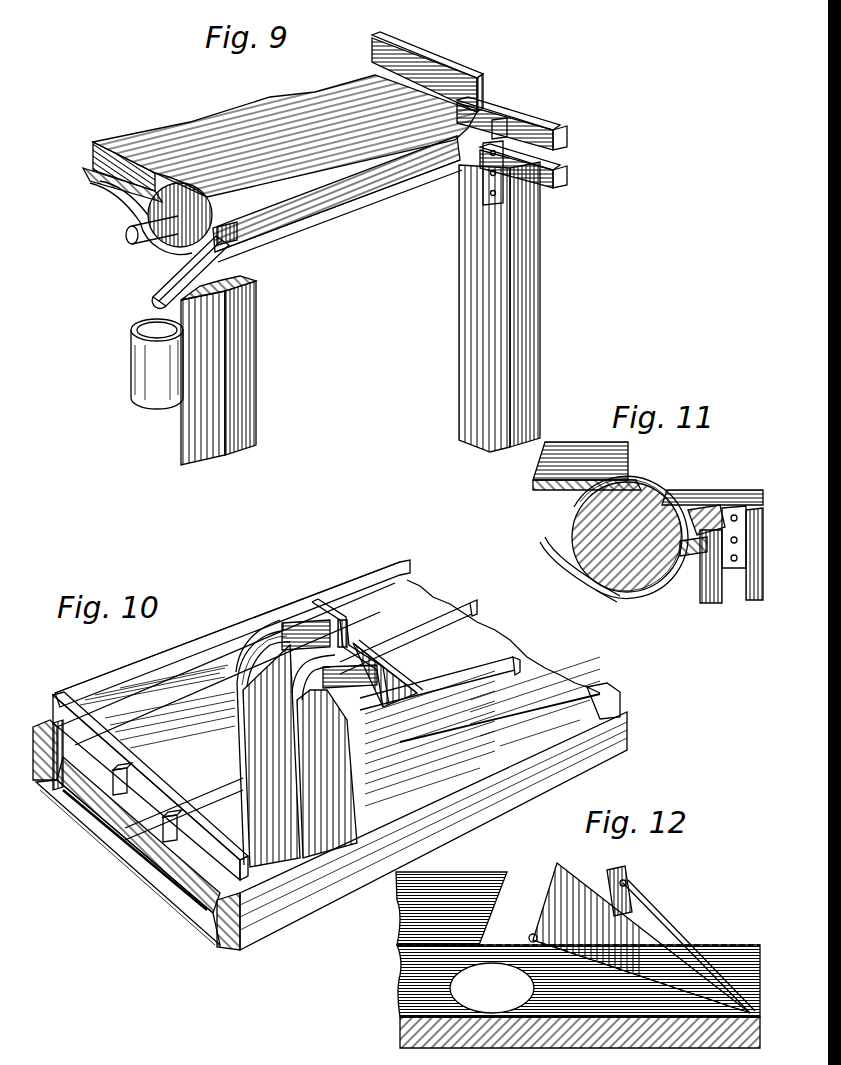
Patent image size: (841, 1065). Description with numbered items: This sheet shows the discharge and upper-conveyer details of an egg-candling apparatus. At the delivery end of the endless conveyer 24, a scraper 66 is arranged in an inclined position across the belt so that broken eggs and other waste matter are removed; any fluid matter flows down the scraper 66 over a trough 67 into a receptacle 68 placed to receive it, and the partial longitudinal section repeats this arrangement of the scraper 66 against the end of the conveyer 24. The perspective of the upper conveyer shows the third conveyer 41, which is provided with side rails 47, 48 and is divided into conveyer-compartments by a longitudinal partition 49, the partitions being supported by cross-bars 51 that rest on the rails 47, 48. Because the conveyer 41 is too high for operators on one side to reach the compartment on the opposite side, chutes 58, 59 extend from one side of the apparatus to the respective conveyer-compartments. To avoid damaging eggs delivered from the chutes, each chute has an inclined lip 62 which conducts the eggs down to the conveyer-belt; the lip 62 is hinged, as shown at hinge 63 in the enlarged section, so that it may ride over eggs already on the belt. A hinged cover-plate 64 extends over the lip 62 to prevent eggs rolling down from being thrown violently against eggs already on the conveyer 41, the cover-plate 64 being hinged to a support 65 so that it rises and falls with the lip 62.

In FIG. 9, the conveyer 24 is at (145, 142).
In FIG. 11, the conveyer 24 is at (655, 490).
In FIG. 10, the third conveyer 41 is at (110, 790).
In FIG. 12, the third conveyer 41 is at (400, 1017).
In FIG. 10, the side rail 47 is at (255, 632).
In FIG. 10, the side rail 48 is at (622, 692).
In FIG. 10, the longitudinal partition 49 is at (163, 753).
In FIG. 10, the cross-bar 51 is at (203, 808).
In FIG. 10, the chute 58 is at (287, 866).
In FIG. 12, the chute 58 is at (480, 943).
In FIG. 10, the chute 59 is at (338, 845).
In FIG. 10, the inclined lip 62 is at (380, 712).
In FIG. 12, the inclined lip 62 is at (641, 938).
In FIG. 12, the hinge 63 is at (530, 934).
In FIG. 10, the hinged cover-plate 64 is at (420, 677).
In FIG. 12, the hinged cover-plate 64 is at (673, 932).
In FIG. 10, the support 65 is at (318, 604).
In FIG. 12, the support 65 is at (628, 882).
In FIG. 9, the scraper 66 is at (222, 232).
In FIG. 11, the scraper 66 is at (686, 556).
In FIG. 9, the trough 67 is at (200, 262).
In FIG. 9, the receptacle 68 is at (148, 363).